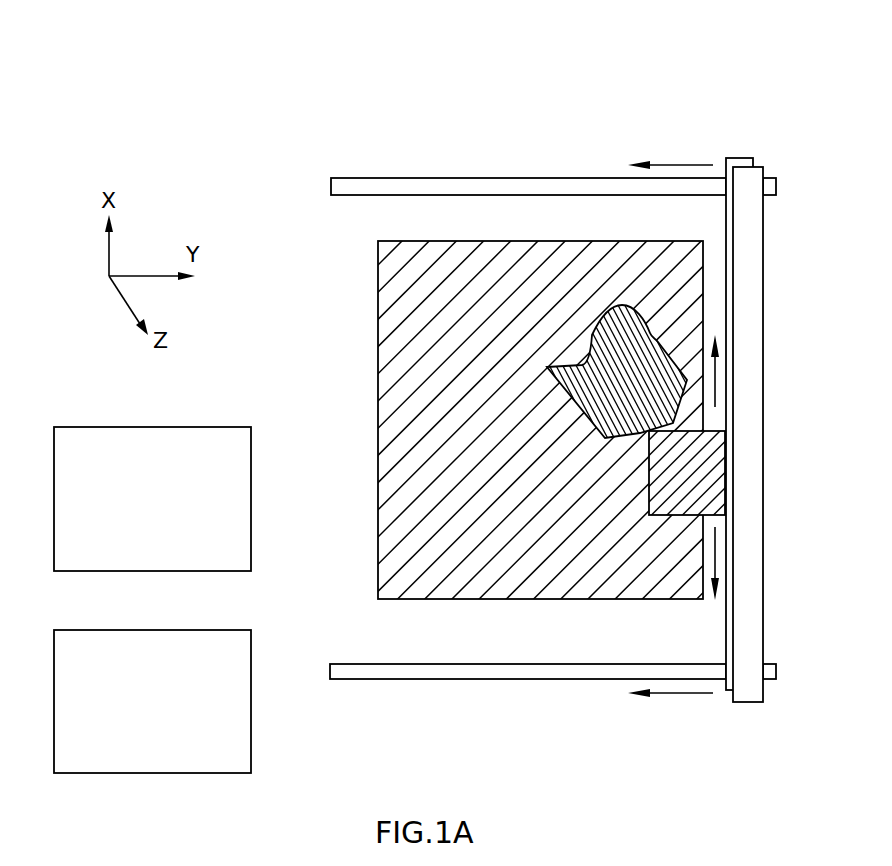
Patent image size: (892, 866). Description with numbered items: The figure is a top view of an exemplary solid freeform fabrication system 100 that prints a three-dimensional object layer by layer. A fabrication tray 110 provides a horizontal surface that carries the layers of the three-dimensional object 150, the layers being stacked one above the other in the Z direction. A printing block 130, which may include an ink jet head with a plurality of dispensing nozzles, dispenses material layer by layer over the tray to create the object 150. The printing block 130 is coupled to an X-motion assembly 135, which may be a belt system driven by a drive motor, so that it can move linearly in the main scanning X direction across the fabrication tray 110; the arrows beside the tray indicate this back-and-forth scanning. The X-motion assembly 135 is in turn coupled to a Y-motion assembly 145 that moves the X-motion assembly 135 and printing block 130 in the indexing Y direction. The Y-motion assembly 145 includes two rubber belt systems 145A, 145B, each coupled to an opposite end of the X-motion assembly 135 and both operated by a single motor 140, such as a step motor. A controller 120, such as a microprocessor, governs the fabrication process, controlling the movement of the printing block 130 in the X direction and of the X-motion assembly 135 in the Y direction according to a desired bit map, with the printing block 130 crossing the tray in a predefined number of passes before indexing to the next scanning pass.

The solid freeform fabrication system 100 is at (644, 74).
The fabrication tray 110 is at (640, 241).
The controller 120 is at (173, 630).
The printing block 130 is at (690, 418).
The X-motion assembly 135 is at (763, 237).
The motor 140 is at (173, 427).
The Y-motion assembly 145 is at (331, 184).
The rubber belt system 145A is at (475, 680).
The rubber belt system 145B is at (475, 178).
The three-dimensional object 150 is at (655, 330).